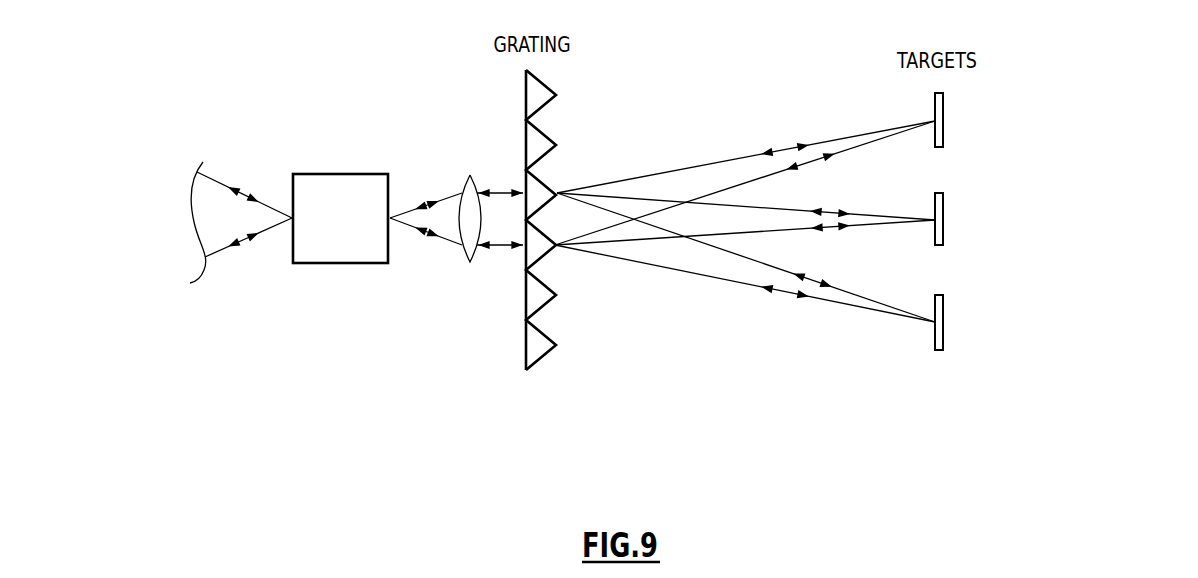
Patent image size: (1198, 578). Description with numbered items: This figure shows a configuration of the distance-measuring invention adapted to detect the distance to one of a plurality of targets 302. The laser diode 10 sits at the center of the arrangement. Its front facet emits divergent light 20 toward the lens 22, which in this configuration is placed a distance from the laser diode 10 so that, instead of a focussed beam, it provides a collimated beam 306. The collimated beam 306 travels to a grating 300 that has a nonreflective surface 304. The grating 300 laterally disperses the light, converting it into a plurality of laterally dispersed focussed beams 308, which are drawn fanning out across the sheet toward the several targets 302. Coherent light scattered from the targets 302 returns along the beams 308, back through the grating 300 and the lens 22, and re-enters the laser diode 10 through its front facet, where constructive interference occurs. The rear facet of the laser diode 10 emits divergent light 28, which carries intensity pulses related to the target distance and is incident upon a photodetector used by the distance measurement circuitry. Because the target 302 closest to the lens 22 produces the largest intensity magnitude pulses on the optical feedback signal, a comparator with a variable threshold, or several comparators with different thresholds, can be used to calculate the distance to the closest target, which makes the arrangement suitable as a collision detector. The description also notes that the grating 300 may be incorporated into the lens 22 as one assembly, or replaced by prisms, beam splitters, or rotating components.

The laser diode 10 is at (358, 173).
The divergent light 20 is at (428, 212).
The lens 22 is at (457, 252).
The divergent light 28 is at (228, 230).
The grating 300 is at (543, 363).
The targets 302 is at (943, 145).
The nonreflective surface 304 is at (525, 339).
The collimated beam 306 is at (510, 203).
The laterally dispersed focussed beams 308 is at (788, 157).